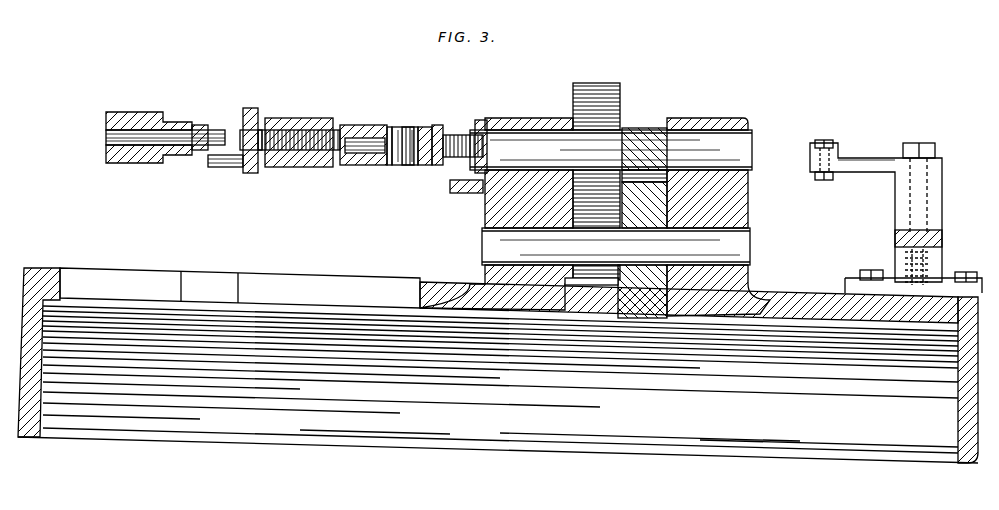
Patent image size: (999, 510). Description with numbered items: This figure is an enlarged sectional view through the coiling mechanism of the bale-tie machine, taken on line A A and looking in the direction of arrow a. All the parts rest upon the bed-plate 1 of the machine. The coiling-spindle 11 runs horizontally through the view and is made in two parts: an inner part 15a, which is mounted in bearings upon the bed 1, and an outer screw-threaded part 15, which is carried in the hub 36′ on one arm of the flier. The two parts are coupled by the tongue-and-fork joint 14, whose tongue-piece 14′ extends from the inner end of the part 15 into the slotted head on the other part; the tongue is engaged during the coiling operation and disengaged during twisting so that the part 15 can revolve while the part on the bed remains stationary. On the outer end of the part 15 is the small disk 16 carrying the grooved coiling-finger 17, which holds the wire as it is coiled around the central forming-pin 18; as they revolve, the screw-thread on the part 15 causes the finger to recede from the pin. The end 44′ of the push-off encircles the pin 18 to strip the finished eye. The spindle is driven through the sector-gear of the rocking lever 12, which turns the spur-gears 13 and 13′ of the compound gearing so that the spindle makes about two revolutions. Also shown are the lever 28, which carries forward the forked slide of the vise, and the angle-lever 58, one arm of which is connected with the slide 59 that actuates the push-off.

The bed-plate 1 is at (498, 365).
The forming-pin 18 is at (219, 128).
The end of push-off 44′ is at (200, 152).
The coiling-finger 17 is at (222, 168).
The disk 16 is at (251, 132).
The hub 36′ is at (307, 118).
The outer part of coiling-spindle 15 is at (310, 166).
The coiling-spindle 11 is at (336, 133).
The tongue-and-fork joint 14 is at (416, 116).
The tongue-piece 14′ is at (405, 166).
The lever 28 is at (465, 193).
The inner part of coiling-spindle 15a is at (611, 197).
The rocking lever 12 is at (606, 84).
The spur-gear 13 is at (654, 127).
The spur-gear 13′ is at (650, 312).
The angle-lever 58 is at (942, 238).
The slide 59 is at (838, 150).